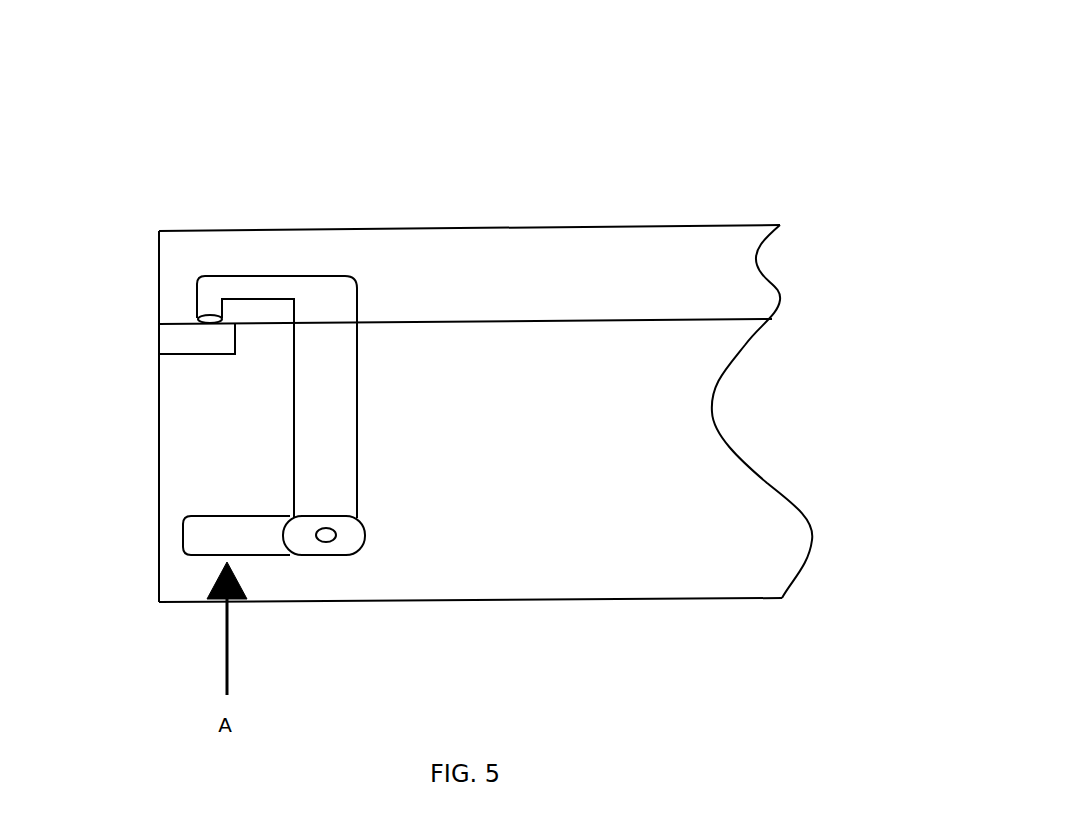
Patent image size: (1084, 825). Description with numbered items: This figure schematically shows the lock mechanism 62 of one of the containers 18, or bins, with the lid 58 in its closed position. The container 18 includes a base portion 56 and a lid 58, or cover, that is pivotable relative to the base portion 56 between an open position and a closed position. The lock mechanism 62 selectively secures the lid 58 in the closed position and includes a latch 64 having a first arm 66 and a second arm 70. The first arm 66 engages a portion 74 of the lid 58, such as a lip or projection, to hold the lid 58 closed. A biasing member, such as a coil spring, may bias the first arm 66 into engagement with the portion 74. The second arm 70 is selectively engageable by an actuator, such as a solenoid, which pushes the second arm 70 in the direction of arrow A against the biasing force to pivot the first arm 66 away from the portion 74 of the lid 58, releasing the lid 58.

The container 18 is at (693, 74).
The base portion 56 is at (622, 600).
The lid 58 is at (540, 227).
The lock mechanism 62 is at (149, 197).
The latch 64 is at (347, 418).
The first arm 66 is at (267, 285).
The second arm 70 is at (225, 522).
The portion of the lid 74 is at (165, 339).